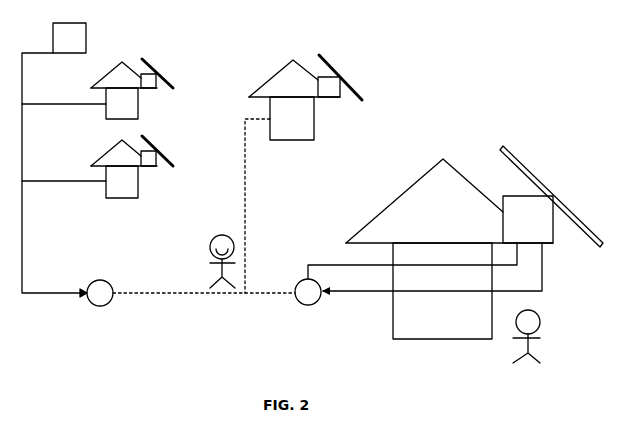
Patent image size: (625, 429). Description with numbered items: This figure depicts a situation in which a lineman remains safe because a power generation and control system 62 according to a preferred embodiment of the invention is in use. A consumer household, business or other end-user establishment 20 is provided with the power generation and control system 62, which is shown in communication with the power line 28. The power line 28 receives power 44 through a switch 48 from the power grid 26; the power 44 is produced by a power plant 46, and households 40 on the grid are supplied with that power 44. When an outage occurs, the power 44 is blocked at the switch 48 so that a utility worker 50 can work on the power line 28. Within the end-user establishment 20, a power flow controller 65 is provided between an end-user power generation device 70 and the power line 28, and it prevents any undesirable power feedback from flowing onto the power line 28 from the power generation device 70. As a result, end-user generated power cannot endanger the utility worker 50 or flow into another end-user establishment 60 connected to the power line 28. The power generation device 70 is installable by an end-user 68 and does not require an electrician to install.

The end-user establishment 20 is at (418, 180).
The power grid 26 is at (22, 227).
The power line 28 is at (135, 295).
The households 40 is at (139, 103).
The power 44 is at (80, 296).
The power plant 46 is at (87, 39).
The switch 48 is at (90, 281).
The utility worker 50 is at (216, 237).
The end-user establishment 60 is at (272, 80).
The power generation and control system 62 is at (338, 328).
The power flow controller 65 is at (302, 280).
The end-user 68 is at (530, 345).
The power generation device 70 is at (553, 237).